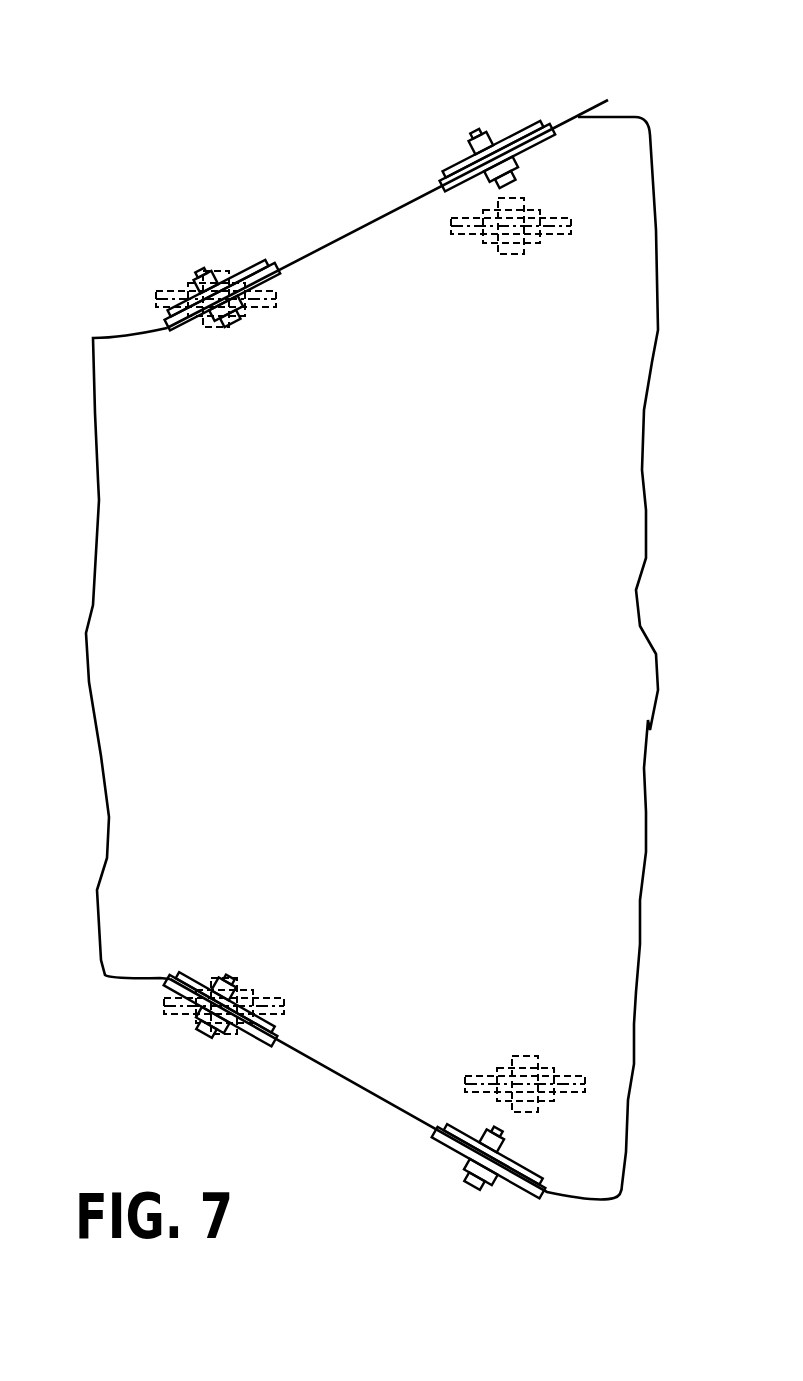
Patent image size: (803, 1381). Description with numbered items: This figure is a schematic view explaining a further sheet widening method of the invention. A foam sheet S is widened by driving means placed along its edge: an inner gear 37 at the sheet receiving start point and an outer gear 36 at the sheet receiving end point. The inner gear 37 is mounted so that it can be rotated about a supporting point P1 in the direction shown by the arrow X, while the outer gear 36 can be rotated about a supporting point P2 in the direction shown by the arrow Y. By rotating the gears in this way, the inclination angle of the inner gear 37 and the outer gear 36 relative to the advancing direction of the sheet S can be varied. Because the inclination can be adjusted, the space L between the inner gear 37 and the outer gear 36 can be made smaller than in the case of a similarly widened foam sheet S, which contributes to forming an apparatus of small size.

The outer gear 36 is at (527, 123).
The inner gear 37 is at (157, 306).
The space between inner gear and outer gear L is at (492, 123).
The sheet S is at (360, 229).
The arrow X is at (282, 299).
The arrow Y is at (596, 107).
The supporting point P1 is at (216, 93).
The supporting point P2 is at (628, 226).